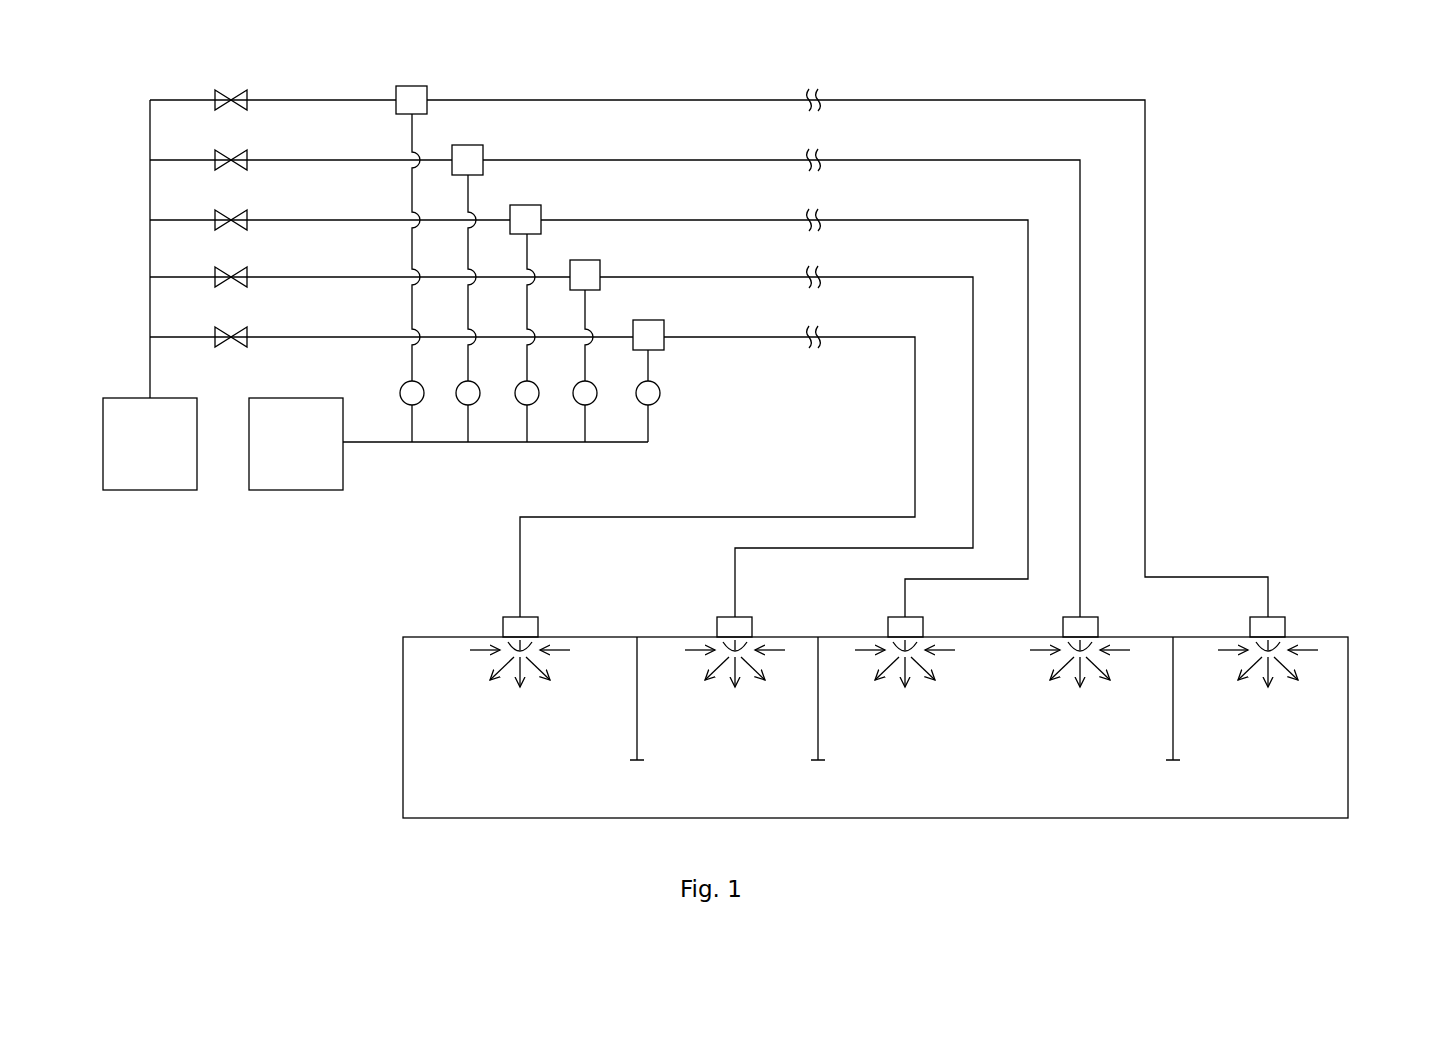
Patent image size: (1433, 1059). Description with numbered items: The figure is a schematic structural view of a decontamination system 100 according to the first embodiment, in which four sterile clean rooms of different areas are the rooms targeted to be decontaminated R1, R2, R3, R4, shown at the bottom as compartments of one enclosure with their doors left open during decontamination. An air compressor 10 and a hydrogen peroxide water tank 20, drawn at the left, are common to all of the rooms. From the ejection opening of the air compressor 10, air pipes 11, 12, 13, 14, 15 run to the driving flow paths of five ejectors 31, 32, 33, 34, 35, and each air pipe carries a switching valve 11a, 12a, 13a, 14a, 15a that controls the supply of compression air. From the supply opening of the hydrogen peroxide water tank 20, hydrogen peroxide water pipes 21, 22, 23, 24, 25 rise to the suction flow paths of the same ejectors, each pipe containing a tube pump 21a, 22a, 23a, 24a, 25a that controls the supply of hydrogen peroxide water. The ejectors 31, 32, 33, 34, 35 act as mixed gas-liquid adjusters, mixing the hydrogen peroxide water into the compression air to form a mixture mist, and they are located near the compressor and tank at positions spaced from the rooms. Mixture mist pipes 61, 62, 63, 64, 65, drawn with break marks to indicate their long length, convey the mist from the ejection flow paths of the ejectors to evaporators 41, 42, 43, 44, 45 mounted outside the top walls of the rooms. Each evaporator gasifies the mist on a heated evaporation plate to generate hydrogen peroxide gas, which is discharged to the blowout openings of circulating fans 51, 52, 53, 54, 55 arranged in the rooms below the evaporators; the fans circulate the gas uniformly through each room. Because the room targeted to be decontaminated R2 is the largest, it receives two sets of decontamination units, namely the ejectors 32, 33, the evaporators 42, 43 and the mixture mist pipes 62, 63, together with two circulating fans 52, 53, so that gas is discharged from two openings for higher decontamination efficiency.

The decontamination system 100 is at (1228, 133).
The air compressor 10 is at (124, 490).
The hydrogen peroxide water tank 20 is at (273, 490).
The air pipe 11 is at (312, 99).
The air pipe 12 is at (312, 159).
The air pipe 13 is at (312, 219).
The air pipe 14 is at (312, 276).
The air pipe 15 is at (312, 336).
The switching valve 11a is at (222, 92).
The switching valve 12a is at (222, 152).
The switching valve 13a is at (222, 212).
The switching valve 14a is at (222, 269).
The switching valve 15a is at (222, 329).
The hydrogen peroxide water pipe 21 is at (416, 141).
The hydrogen peroxide water pipe 22 is at (472, 197).
The hydrogen peroxide water pipe 23 is at (531, 257).
The hydrogen peroxide water pipe 24 is at (589, 315).
The hydrogen peroxide water pipe 25 is at (652, 372).
The tube pump 21a is at (420, 404).
The tube pump 22a is at (476, 404).
The tube pump 23a is at (535, 404).
The tube pump 24a is at (593, 404).
The tube pump 25a is at (656, 404).
The ejector 31 is at (416, 95).
The ejector 32 is at (472, 154).
The ejector 33 is at (530, 213).
The ejector 34 is at (590, 270).
The ejector 35 is at (653, 330).
The evaporator 41 is at (1275, 630).
The evaporator 42 is at (1087, 630).
The evaporator 43 is at (912, 630).
The evaporator 44 is at (742, 630).
The evaporator 45 is at (527, 630).
The circulating fan 51 is at (1262, 655).
The circulating fan 52 is at (1074, 655).
The circulating fan 53 is at (899, 655).
The circulating fan 54 is at (729, 655).
The circulating fan 55 is at (514, 655).
The mixture mist pipe 61 is at (878, 99).
The mixture mist pipe 62 is at (878, 159).
The mixture mist pipe 63 is at (878, 219).
The mixture mist pipe 64 is at (878, 276).
The mixture mist pipe 65 is at (858, 336).
The room targeted to be decontaminated R1 is at (1335, 697).
The room targeted to be decontaminated R2 is at (1147, 668).
The room targeted to be decontaminated R3 is at (653, 652).
The room targeted to be decontaminated R4 is at (420, 690).